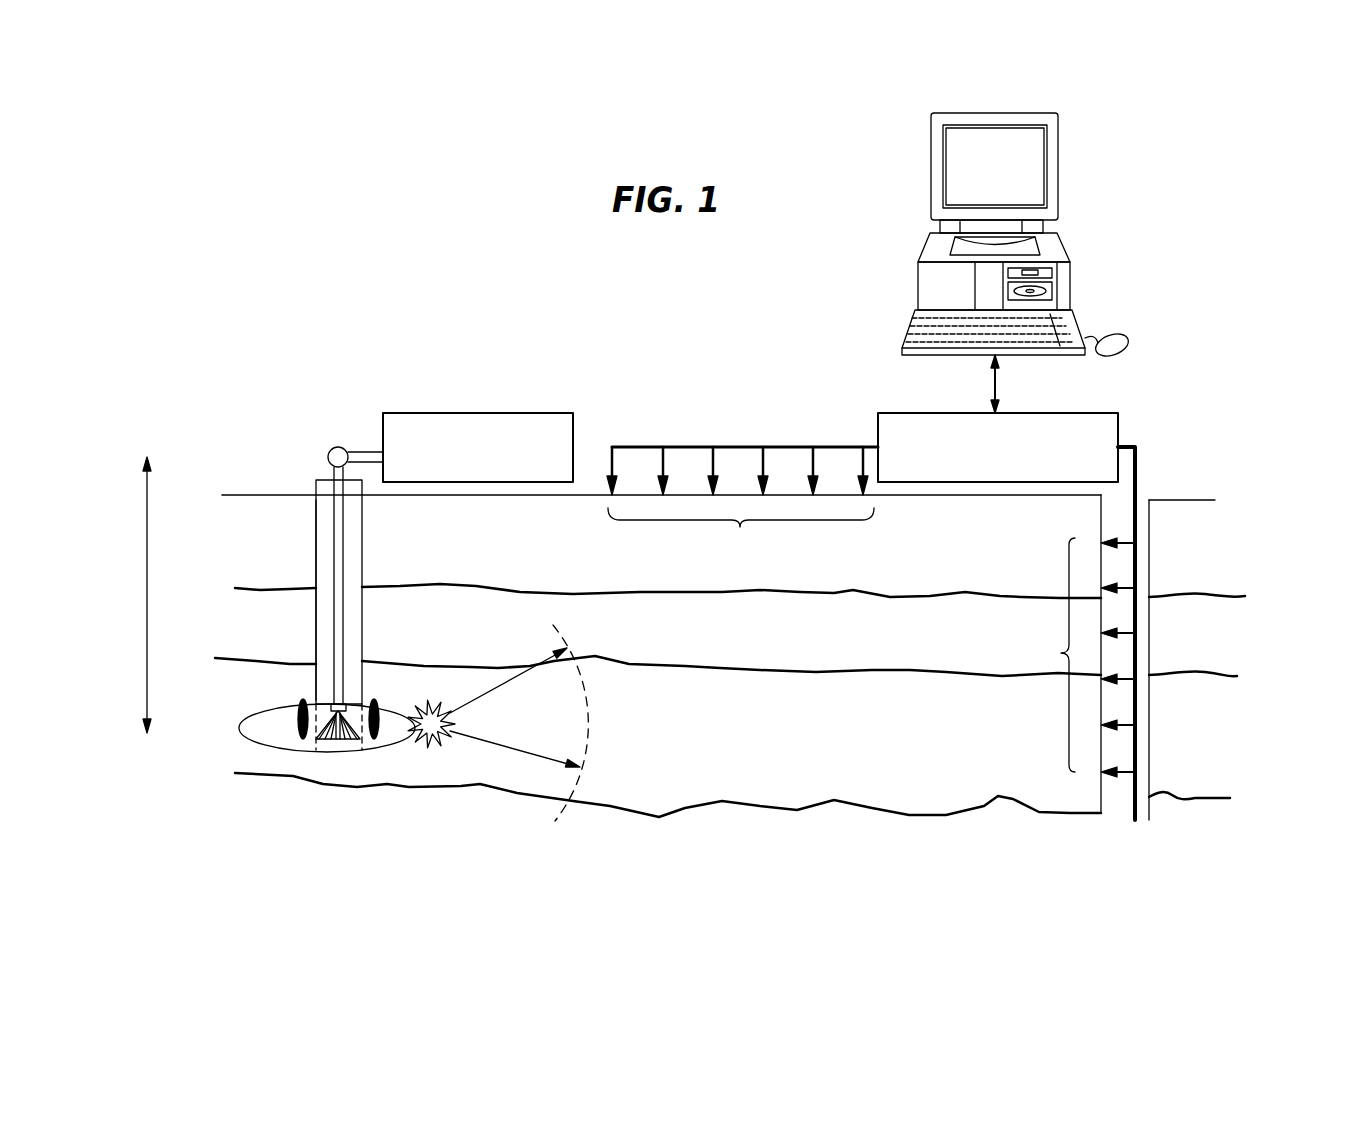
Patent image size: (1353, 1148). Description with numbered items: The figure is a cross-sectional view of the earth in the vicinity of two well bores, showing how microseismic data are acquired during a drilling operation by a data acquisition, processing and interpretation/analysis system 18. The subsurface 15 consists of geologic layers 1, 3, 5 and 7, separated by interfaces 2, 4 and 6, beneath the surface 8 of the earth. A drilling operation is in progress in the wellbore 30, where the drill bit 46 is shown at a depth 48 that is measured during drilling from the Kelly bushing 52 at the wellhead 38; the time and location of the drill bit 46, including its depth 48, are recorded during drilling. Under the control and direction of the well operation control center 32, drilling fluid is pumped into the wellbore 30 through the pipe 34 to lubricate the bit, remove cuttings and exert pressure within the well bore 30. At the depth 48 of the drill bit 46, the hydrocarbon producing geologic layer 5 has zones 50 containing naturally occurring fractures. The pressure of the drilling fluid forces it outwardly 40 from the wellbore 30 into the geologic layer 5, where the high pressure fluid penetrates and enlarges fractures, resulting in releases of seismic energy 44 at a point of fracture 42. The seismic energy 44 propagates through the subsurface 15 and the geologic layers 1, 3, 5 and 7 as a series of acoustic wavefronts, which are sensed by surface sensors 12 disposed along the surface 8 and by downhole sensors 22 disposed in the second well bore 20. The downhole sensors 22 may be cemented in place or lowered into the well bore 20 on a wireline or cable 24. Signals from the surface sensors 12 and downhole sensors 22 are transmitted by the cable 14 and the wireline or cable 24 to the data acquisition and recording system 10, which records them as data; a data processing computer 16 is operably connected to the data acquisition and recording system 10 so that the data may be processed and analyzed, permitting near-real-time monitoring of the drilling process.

The geologic layer 1 is at (849, 574).
The interface 2 is at (948, 598).
The geologic layer 3 is at (849, 644).
The interface 4 is at (948, 676).
The geologic layer 5 is at (851, 749).
The interface 6 is at (948, 816).
The geologic layer 7 is at (850, 881).
The surface 8 is at (220, 494).
The data acquisition and recording system 10 is at (1118, 425).
The surface sensors 12 is at (741, 534).
The cable 14 is at (741, 447).
The subsurface 15 is at (1262, 560).
The data processing computer 16 is at (1066, 243).
The data acquisition, processing and interpretation/analysis system 18 is at (1225, 242).
The well bore 20 is at (1149, 623).
The downhole sensors 22 is at (1084, 657).
The wireline or cable 24 is at (1135, 477).
The wellbore 30 is at (316, 538).
The well operation control center 32 is at (453, 413).
The pipe 34 is at (344, 542).
The wellhead 38 is at (316, 480).
The outward flow of drilling fluid 40 is at (240, 734).
The point of fracture 42 is at (428, 749).
The seismic energy 44 is at (588, 717).
The drill bit 46 is at (340, 745).
The depth 48 is at (147, 585).
The zones 50 is at (378, 700).
The Kelly bushing 52 is at (332, 448).